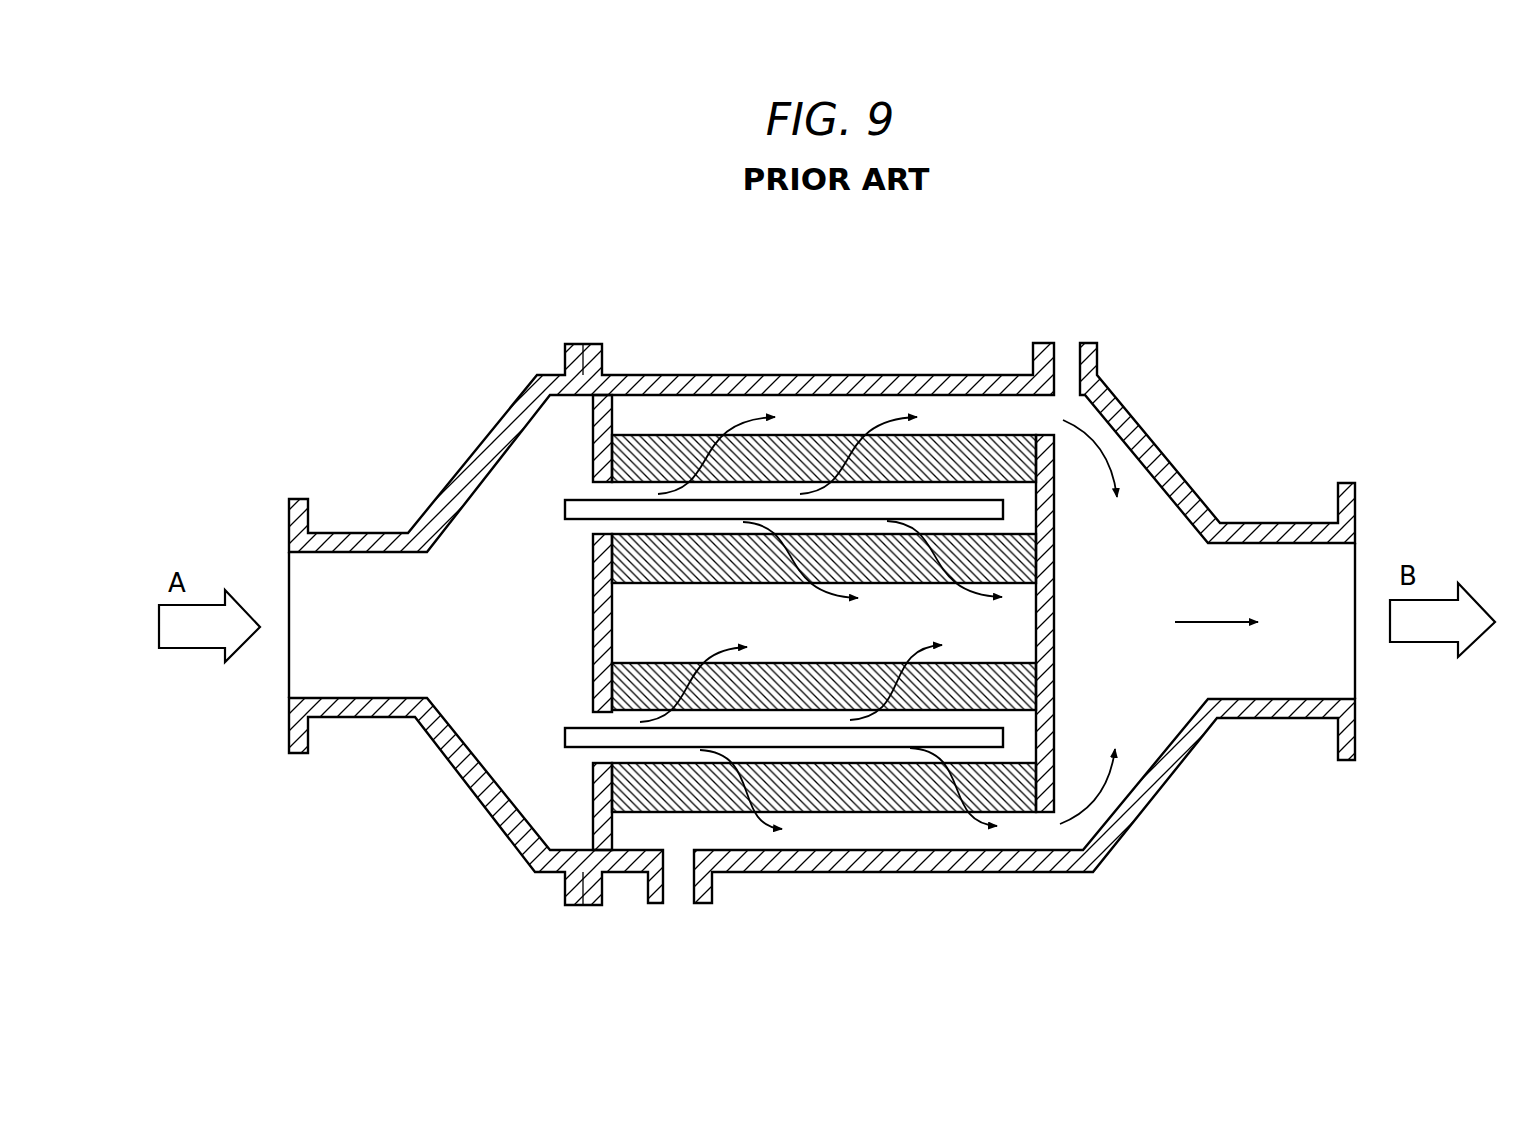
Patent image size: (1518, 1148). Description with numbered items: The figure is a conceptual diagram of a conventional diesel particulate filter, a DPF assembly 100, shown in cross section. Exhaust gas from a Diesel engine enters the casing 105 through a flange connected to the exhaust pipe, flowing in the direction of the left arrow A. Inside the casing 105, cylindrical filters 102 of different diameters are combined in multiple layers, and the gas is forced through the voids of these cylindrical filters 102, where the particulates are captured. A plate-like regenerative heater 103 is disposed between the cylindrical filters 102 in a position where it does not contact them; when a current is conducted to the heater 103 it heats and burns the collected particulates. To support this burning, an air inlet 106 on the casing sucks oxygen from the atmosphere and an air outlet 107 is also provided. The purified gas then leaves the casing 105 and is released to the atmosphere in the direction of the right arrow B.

The prior art exhaust gas purifying device (catalytic converter) 100 is at (908, 370).
The cylindrical filters 102 is at (1015, 787).
The regenerative heater 103 is at (857, 733).
The casing 105 is at (757, 385).
The air inlet 106 is at (675, 902).
The air outlet 107 is at (1068, 343).